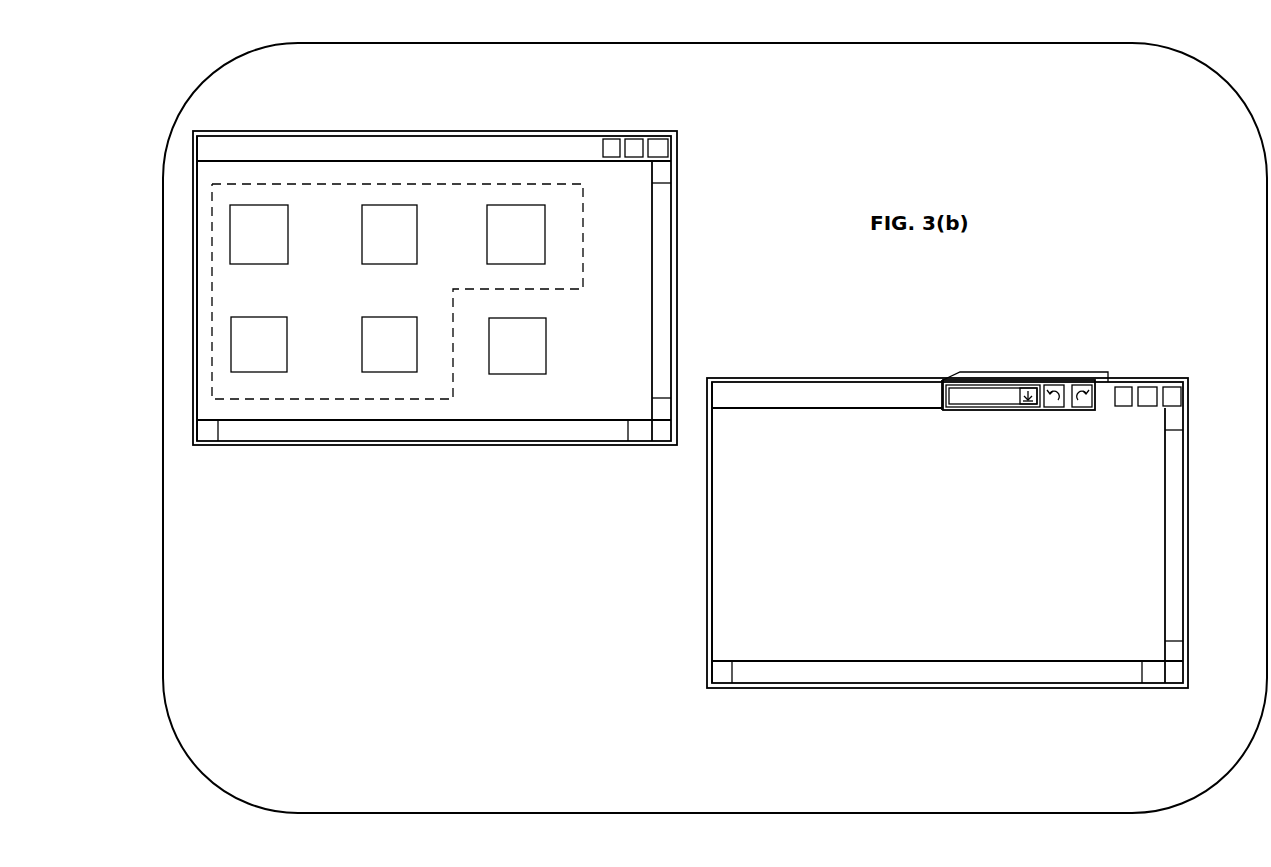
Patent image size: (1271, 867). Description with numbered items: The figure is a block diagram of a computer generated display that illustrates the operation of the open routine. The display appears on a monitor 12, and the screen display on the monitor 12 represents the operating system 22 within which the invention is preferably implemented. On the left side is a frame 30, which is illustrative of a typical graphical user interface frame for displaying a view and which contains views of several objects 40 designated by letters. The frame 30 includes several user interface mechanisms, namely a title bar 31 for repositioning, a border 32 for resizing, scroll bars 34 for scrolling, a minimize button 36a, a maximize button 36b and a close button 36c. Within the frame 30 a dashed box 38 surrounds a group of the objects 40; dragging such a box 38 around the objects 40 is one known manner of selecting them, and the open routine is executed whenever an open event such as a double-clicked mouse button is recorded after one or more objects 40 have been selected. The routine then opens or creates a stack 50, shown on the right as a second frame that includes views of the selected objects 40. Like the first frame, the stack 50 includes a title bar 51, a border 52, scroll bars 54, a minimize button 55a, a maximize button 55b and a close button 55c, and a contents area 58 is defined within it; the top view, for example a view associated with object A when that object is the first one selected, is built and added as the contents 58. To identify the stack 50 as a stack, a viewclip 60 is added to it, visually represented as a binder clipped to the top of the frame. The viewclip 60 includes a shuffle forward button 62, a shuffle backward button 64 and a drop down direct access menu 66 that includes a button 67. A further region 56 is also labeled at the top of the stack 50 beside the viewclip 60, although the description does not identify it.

The monitor 12 is at (202, 791).
The operating system 22 is at (404, 540).
The frame 30 is at (484, 124).
The title bar 31 is at (373, 151).
The border 32 is at (680, 206).
The scroll bars 34 is at (662, 278).
The minimize button 36a is at (611, 139).
The maximize button 36b is at (637, 139).
The close button 36c is at (667, 138).
The box 38 is at (558, 290).
The objects 40 is at (417, 215).
The stack 50 is at (821, 367).
The title bar 51 is at (767, 395).
The border 52 is at (1064, 690).
The scroll bars 54 is at (1177, 527).
The minimize button 55a is at (1130, 386).
The maximize button 55b is at (1158, 387).
The close button 55c is at (1183, 388).
The toolbar area 56 is at (898, 369).
The contents area 58 is at (792, 584).
The viewclip 60 is at (978, 359).
The shuffle forward button 62 is at (1088, 385).
The shuffle backward button 64 is at (1057, 385).
The drop down direct access menu 66 is at (999, 384).
The button 67 is at (1031, 408).